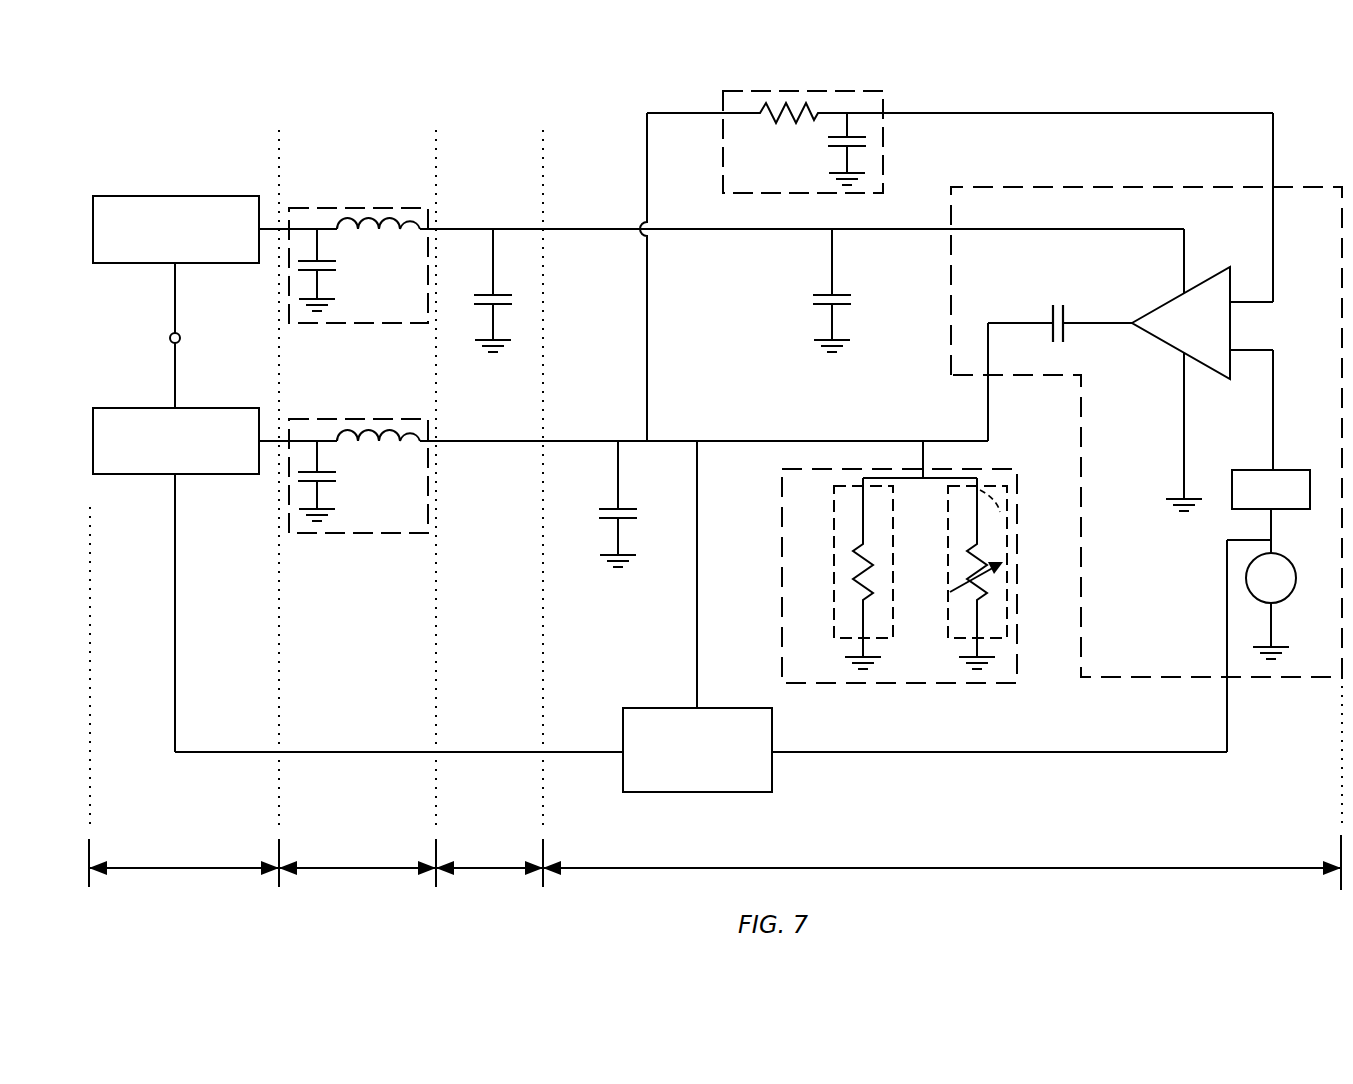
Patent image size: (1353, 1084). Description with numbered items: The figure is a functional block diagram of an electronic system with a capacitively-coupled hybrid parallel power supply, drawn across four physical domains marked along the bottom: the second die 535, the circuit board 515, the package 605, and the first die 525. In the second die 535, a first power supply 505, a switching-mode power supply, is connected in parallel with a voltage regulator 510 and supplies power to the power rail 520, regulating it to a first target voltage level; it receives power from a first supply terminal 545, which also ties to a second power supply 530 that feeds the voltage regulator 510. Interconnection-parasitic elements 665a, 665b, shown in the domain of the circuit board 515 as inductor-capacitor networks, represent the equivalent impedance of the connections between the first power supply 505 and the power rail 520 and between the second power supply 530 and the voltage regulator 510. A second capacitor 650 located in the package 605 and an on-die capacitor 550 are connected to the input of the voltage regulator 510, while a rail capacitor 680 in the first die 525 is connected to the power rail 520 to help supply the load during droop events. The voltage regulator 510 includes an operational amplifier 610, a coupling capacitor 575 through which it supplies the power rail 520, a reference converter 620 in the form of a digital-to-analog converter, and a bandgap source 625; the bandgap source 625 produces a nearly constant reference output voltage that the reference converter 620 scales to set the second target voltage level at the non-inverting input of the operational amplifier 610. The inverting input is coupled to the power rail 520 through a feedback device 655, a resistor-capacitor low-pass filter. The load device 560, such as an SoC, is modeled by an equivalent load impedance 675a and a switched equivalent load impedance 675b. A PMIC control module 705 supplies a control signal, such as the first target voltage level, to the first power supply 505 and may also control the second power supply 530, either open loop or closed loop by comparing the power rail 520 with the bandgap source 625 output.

The first power supply 505 is at (100, 408).
The second power supply 530 is at (100, 196).
The first supply terminal 545 is at (170, 337).
The interconnection-parasitic element 665a is at (370, 208).
The interconnection-parasitic element 665b is at (370, 419).
The second capacitor 650 is at (490, 292).
The on-die capacitor 550 is at (829, 292).
The rail capacitor 680 is at (614, 506).
The feedback device 655 is at (884, 101).
The voltage regulator 510 is at (1318, 187).
The operational amplifier 610 is at (1222, 267).
The coupling capacitor 575 is at (1053, 305).
The power rail 520 is at (770, 441).
The load device 560 is at (1017, 484).
The equivalent load impedance 675a is at (834, 546).
The switched equivalent load impedance 675b is at (948, 546).
The reference converter 620 is at (1296, 470).
The bandgap source 625 is at (1293, 564).
The PMIC control module 705 is at (772, 781).
The second die 535 is at (204, 868).
The circuit board 515 is at (356, 868).
The package 605 is at (493, 868).
The first die 525 is at (912, 868).